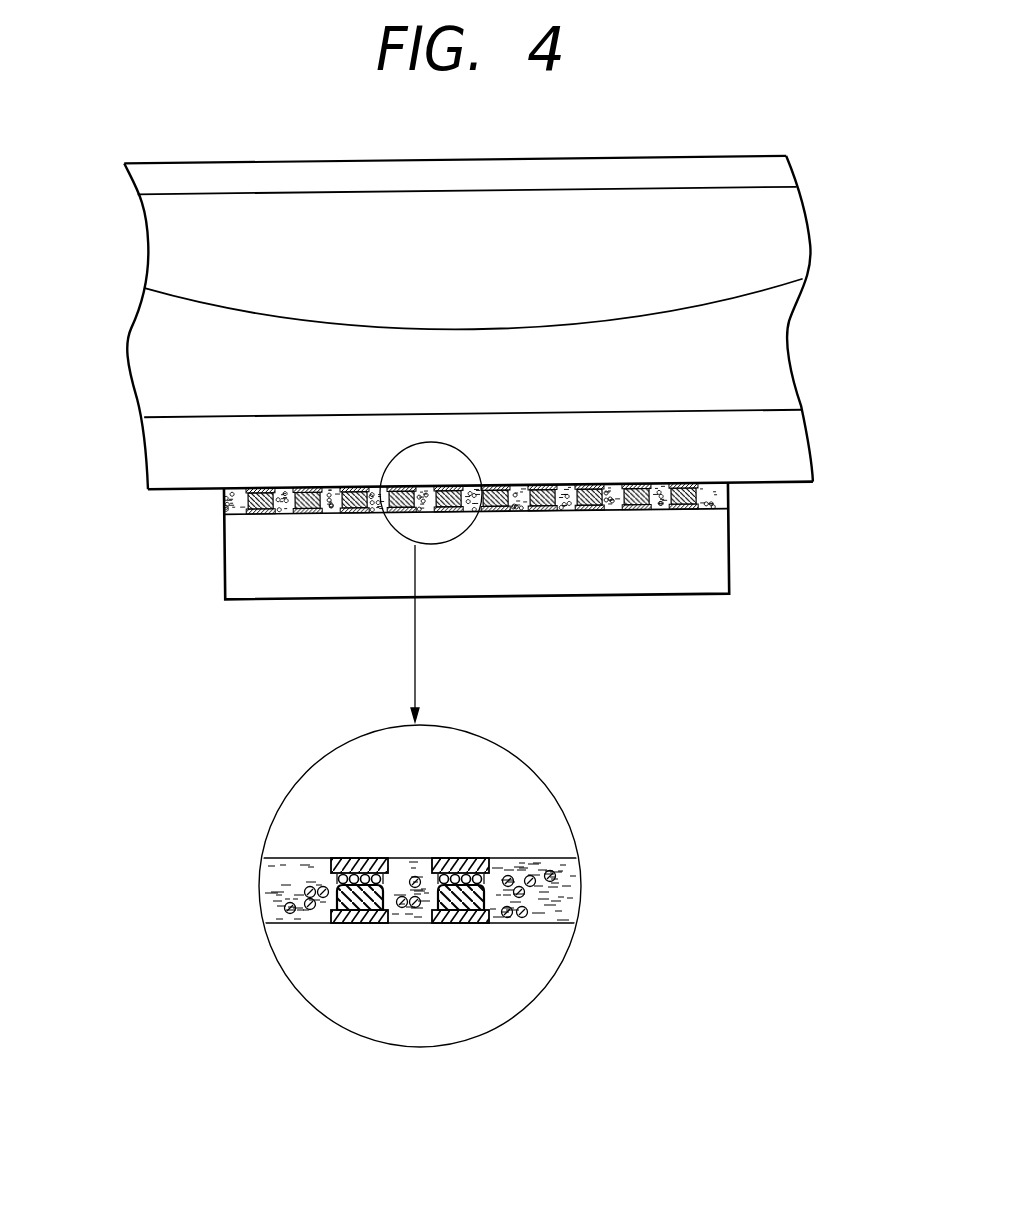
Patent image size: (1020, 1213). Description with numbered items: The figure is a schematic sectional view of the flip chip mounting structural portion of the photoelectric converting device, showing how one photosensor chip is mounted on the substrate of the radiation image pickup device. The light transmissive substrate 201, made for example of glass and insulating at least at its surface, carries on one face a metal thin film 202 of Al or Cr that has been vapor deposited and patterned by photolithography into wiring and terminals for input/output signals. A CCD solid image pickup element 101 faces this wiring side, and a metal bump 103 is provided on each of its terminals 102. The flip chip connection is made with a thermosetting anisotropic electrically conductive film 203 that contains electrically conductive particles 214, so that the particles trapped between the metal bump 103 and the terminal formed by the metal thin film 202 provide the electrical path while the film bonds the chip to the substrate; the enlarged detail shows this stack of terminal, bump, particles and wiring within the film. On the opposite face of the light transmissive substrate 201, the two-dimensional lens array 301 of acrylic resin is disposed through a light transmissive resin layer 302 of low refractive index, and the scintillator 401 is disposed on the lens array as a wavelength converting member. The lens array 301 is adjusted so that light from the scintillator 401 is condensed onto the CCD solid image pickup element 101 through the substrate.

The CCD solid image pickup element 101 is at (717, 562).
The terminal 102 is at (260, 512).
The metal bump 103 is at (727, 495).
The light transmissive substrate 201 is at (165, 432).
The metal thin film 202 is at (262, 487).
The anisotropic electrically conductive film 203 is at (728, 507).
The electrically conductive particle 214 is at (292, 912).
The lens array 301 is at (788, 243).
The resin layer 302 is at (775, 358).
The scintillator 401 is at (783, 173).